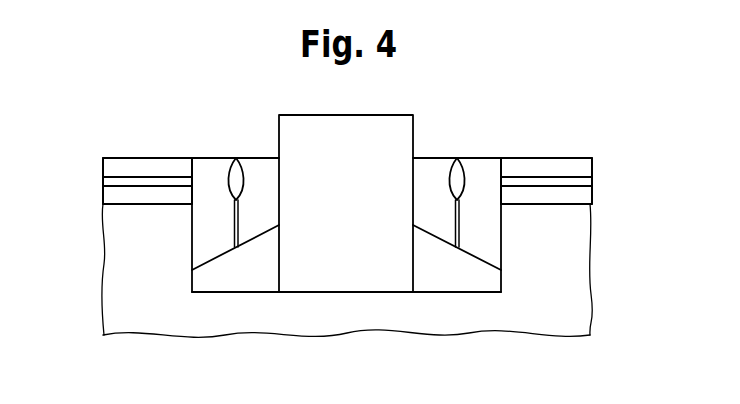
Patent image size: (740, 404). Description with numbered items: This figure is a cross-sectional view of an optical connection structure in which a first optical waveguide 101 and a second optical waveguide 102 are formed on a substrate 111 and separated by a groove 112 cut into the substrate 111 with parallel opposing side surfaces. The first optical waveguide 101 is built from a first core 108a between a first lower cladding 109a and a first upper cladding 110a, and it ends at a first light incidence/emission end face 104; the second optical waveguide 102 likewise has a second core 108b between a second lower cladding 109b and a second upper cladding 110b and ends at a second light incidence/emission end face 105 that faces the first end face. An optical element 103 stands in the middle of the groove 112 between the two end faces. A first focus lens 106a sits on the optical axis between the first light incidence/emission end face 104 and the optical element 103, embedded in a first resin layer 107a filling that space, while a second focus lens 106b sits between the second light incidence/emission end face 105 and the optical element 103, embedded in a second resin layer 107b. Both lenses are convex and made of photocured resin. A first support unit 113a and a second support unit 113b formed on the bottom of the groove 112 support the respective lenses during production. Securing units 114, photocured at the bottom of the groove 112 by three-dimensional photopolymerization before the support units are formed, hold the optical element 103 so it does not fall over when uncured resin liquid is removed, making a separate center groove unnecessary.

The first optical waveguide 101 is at (192, 126).
The second optical waveguide 102 is at (592, 126).
The optical element 103 is at (346, 115).
The first light incidence/emission end face 104 is at (192, 181).
The second light incidence/emission end face 105 is at (501, 181).
The first focus lens 106a is at (236, 158).
The second focus lens 106b is at (457, 158).
The first resin layer 107a is at (198, 243).
The second resin layer 107b is at (492, 243).
The first core 108a is at (103, 181).
The second core 108b is at (592, 181).
The first lower cladding 109a is at (103, 202).
The second lower cladding 109b is at (592, 198).
The first upper cladding 110a is at (103, 160).
The second upper cladding 110b is at (592, 162).
The substrate 111 is at (587, 303).
The groove 112 is at (500, 273).
The first support unit 113a is at (235, 247).
The second support unit 113b is at (457, 247).
The securing units 114 is at (425, 285).